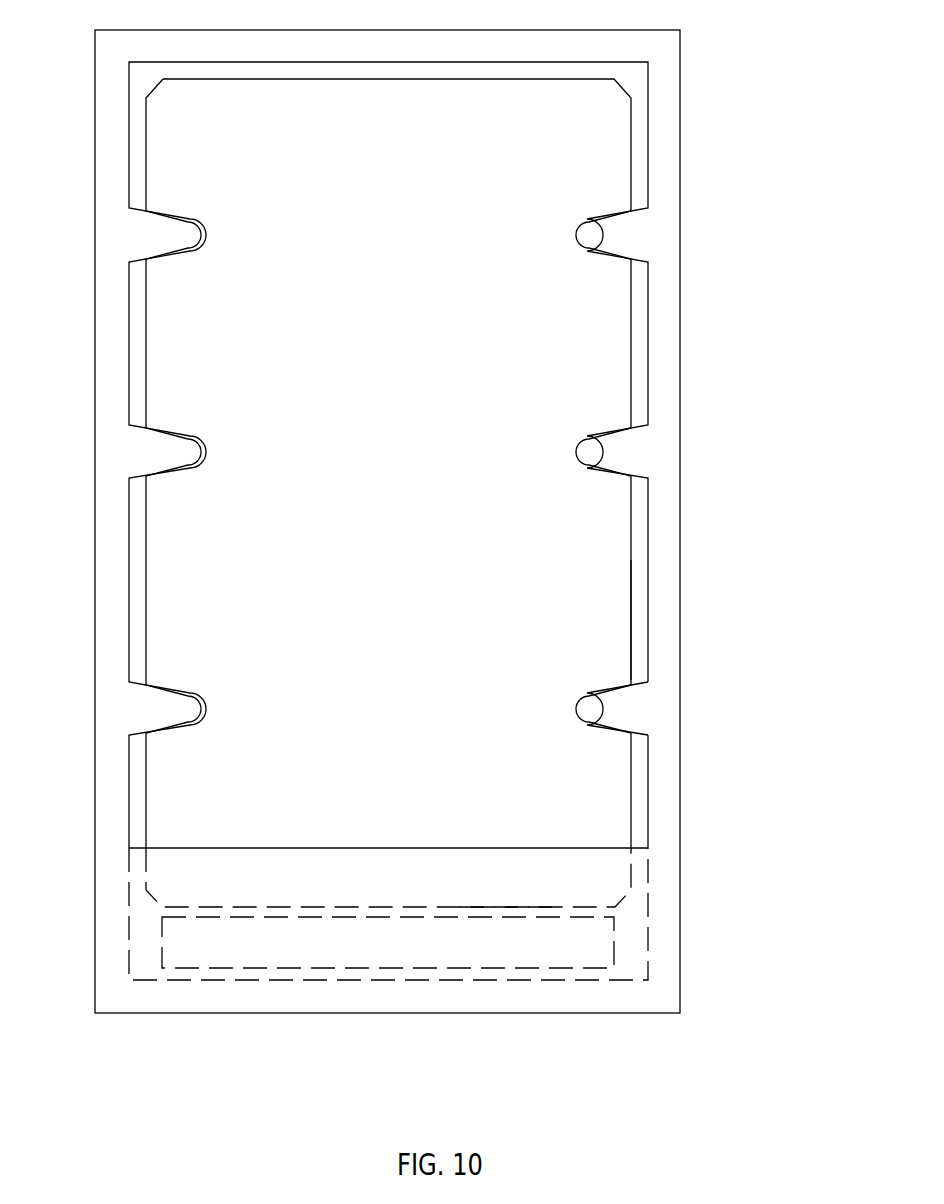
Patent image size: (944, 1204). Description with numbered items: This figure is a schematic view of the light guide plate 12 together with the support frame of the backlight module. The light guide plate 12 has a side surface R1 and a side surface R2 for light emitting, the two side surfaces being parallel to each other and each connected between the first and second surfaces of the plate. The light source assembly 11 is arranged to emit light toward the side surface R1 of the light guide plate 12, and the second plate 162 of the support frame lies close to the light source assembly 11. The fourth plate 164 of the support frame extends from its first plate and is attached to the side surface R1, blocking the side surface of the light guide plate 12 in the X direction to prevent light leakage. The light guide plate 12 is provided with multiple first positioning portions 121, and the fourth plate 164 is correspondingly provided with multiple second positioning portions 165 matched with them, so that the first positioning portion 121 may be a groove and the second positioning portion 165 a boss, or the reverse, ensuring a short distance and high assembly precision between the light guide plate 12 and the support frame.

The light source assembly 11 is at (425, 947).
The light guide plate 12 is at (578, 317).
The first positioning portion 121 is at (583, 730).
The second plate 162 is at (577, 997).
The fourth plate 164 is at (657, 613).
The second positioning portion 165 is at (615, 712).
The side surface R1 is at (512, 907).
The side surface for light emitting R2 is at (630, 620).